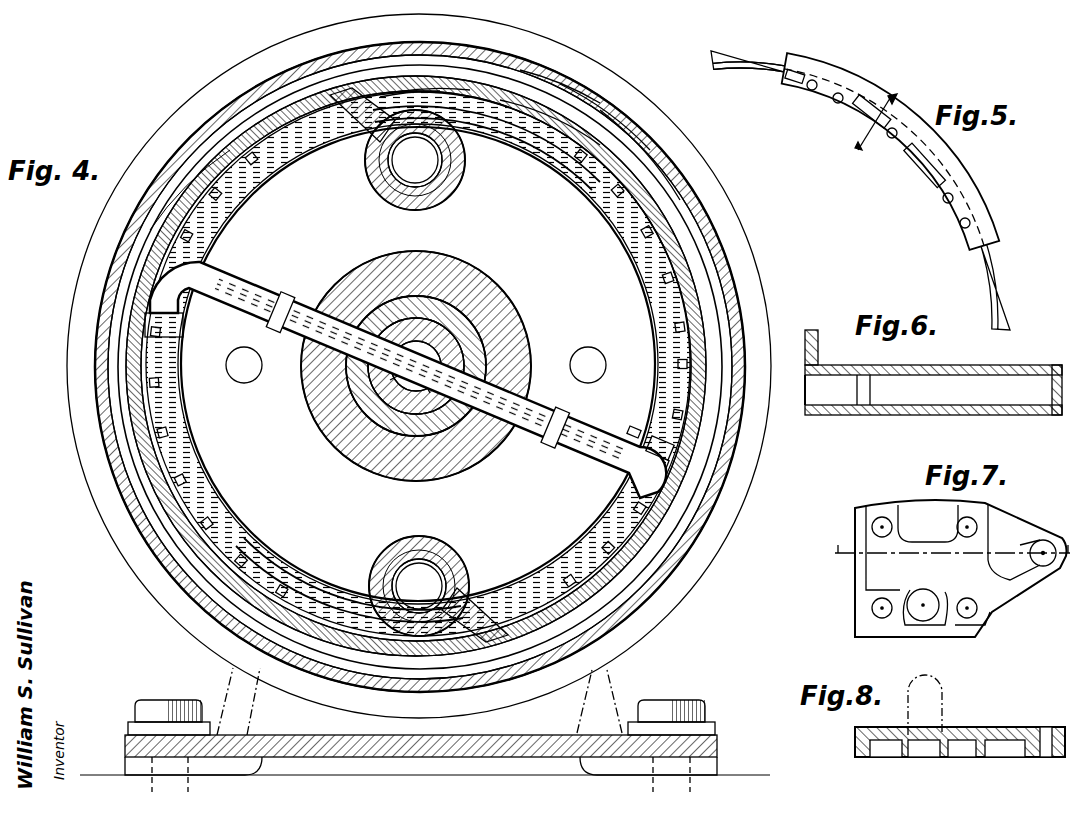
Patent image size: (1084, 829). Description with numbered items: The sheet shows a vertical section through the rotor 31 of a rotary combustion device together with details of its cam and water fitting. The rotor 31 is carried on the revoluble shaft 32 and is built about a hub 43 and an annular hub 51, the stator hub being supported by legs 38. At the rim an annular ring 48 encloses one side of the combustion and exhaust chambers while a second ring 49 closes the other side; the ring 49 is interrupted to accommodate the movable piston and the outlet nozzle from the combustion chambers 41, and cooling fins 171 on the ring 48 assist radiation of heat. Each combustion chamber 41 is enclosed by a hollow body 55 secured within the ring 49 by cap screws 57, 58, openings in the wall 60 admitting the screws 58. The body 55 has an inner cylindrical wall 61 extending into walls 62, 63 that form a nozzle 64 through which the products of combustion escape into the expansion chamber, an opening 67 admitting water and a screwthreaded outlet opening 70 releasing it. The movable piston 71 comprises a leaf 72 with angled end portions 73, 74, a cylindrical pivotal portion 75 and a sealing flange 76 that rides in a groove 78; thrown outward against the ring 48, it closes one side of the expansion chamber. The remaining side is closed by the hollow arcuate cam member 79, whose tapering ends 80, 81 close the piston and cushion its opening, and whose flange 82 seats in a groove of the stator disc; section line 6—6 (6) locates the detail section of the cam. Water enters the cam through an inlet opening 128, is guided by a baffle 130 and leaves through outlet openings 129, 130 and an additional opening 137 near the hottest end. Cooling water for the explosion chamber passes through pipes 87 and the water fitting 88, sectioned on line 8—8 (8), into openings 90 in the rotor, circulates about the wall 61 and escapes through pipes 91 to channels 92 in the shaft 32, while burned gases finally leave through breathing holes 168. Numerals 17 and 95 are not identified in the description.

In FIG. 5, the section line 6— 6 is at (870, 107).
In FIG. 7, the section line 8— 8 is at (952, 558).
In FIG. 4, the pivot arm 17 is at (340, 118).
In FIG. 4, the rotor 31 is at (712, 535).
In FIG. 4, the revoluble shaft 32 is at (428, 344).
In FIG. 4, the legs 38 is at (612, 688).
In FIG. 4, the combustion chamber 41 is at (378, 190).
In FIG. 4, the hub 43 is at (352, 424).
In FIG. 4, the annular ring 48 is at (462, 650).
In FIG. 4, the second ring 49 is at (200, 178).
In FIG. 4, the annular hub 51 is at (372, 470).
In FIG. 4, the hollow body 55 is at (548, 182).
In FIG. 4, the cap screws 57 is at (275, 135).
In FIG. 4, the cap screws 58 is at (610, 205).
In FIG. 4, the wall 60 is at (640, 297).
In FIG. 4, the inner cylindrical wall 61 is at (415, 160).
In FIG. 4, the wall 62 is at (505, 150).
In FIG. 4, the wall 63 is at (455, 112).
In FIG. 4, the nozzle 64 is at (580, 118).
In FIG. 4, the opening 67 is at (395, 604).
In FIG. 4, the screwthreaded outlet opening 70 is at (648, 412).
In FIG. 4, the movable piston 71 is at (425, 92).
In FIG. 4, the leaf 72 is at (412, 82).
In FIG. 4, the angled portion 73 is at (560, 90).
In FIG. 4, the angled portion 74 is at (600, 120).
In FIG. 4, the cylindrical pivotal portion 75 is at (478, 612).
In FIG. 4, the sealing flange 76 is at (440, 650).
In FIG. 4, the groove 78 is at (388, 135).
In FIG. 4, the cam member 79 is at (690, 165).
In FIG. 5, the cam member 79 is at (925, 172).
In FIG. 6, the cam member 79 is at (960, 365).
In FIG. 4, the tapering end 80 is at (738, 300).
In FIG. 5, the tapering end 80 is at (1003, 300).
In FIG. 4, the tapering end 81 is at (478, 70).
In FIG. 5, the tapering end 81 is at (770, 60).
In FIG. 6, the flange 82 is at (816, 330).
In FIG. 8, the pipes 87 is at (942, 700).
In FIG. 7, the water fitting 88 is at (1010, 595).
In FIG. 8, the water fitting 88 is at (990, 727).
In FIG. 4, the openings 90 is at (520, 85).
In FIG. 4, the pipes 91 is at (200, 265).
In FIG. 4, the channels 92 is at (460, 340).
In FIG. 4, the web 95 is at (440, 430).
In FIG. 5, the inlet opening 128 is at (940, 168).
In FIG. 5, the outlet opening 129 is at (880, 106).
In FIG. 5, the baffle 130 is at (892, 140).
In FIG. 6, the baffle 130 is at (812, 398).
In FIG. 5, the additional outlet opening 137 is at (795, 82).
In FIG. 4, the breathing holes 168 is at (244, 383).
In FIG. 4, the cooling fins 171 is at (700, 585).